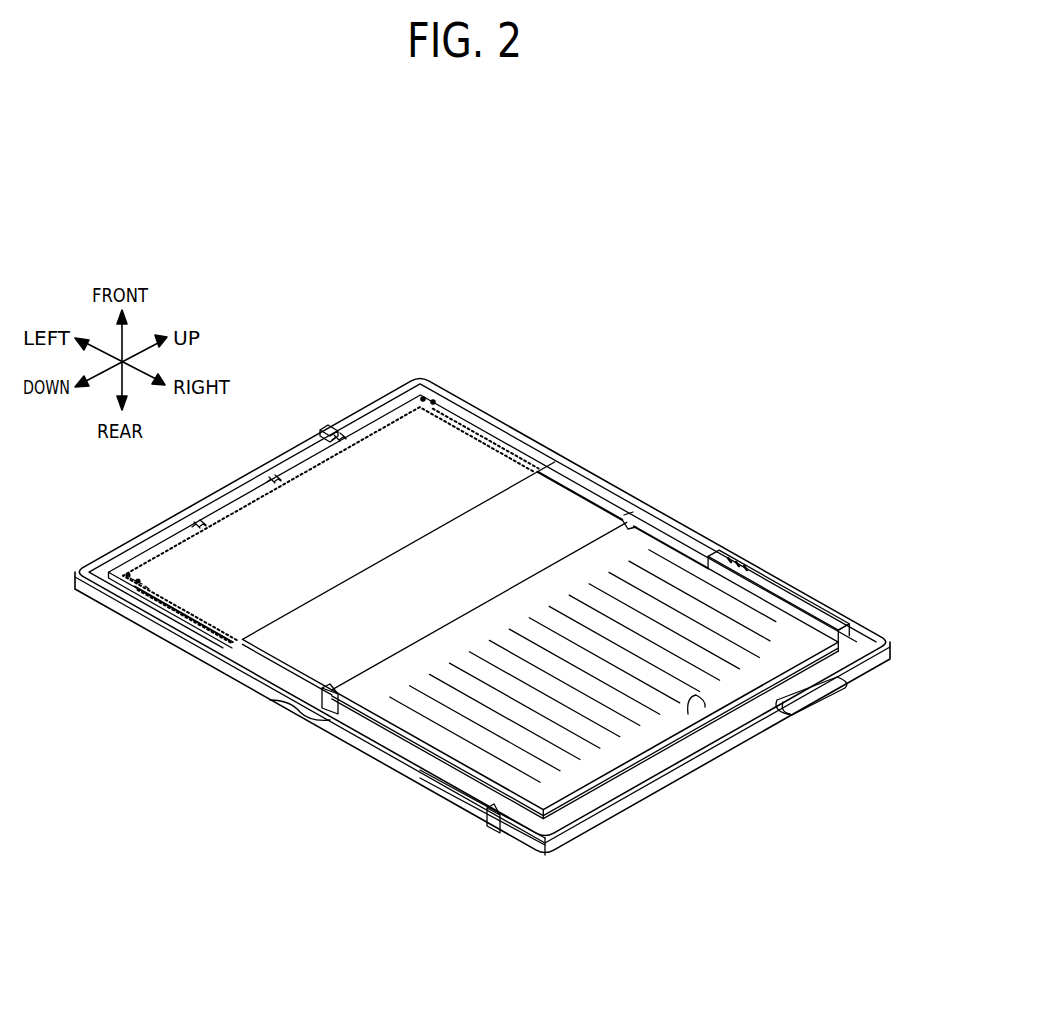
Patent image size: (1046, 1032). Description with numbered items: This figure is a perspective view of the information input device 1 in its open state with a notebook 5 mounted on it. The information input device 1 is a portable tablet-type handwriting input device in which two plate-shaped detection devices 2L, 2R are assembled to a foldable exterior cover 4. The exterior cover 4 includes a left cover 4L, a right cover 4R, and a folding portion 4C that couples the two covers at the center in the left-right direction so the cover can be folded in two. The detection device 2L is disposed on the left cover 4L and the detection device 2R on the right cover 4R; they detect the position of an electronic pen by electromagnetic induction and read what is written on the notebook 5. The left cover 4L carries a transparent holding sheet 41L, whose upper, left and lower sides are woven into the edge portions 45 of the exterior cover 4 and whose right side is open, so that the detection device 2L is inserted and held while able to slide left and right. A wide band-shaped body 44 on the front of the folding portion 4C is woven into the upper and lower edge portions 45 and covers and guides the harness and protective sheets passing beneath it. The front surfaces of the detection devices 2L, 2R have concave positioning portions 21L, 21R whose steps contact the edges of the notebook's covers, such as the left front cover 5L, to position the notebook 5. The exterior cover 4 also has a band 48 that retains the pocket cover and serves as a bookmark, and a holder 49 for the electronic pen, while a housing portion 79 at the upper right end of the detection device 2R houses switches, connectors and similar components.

The information input device 1 is at (706, 372).
The exterior cover 4 is at (496, 415).
The left cover 4L is at (173, 640).
The right cover 4R is at (440, 787).
The folding portion 4C is at (317, 718).
The holding sheet 41L is at (343, 523).
The band-shaped body 44 is at (333, 700).
The edge portions 45 is at (223, 488).
The band 48 is at (497, 820).
The holder 49 is at (820, 698).
The detection device 2L is at (606, 498).
The detection device 2R is at (701, 529).
The positioning portion 21L is at (572, 497).
The positioning portion 21R is at (700, 707).
The notebook 5 is at (543, 597).
The left front cover 5L is at (332, 622).
The housing portion 79 is at (813, 600).